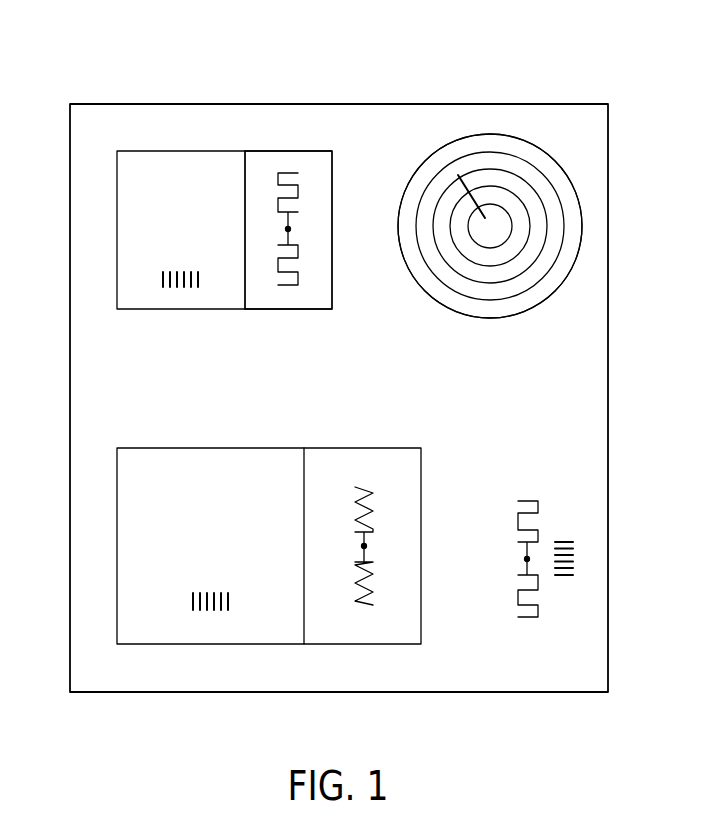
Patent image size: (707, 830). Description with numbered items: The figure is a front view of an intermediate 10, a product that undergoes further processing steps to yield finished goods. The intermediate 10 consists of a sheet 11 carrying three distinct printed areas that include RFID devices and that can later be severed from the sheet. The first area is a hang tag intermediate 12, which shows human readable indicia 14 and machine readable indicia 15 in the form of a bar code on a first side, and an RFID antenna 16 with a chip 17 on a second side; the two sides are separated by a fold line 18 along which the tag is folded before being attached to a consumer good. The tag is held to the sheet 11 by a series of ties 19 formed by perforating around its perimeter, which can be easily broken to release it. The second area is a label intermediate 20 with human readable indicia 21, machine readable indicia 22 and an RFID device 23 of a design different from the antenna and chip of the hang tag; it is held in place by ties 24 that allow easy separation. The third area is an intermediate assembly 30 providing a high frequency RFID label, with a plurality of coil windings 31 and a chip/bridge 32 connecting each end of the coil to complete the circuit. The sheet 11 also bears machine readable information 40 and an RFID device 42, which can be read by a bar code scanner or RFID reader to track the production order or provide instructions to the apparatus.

The intermediate 10 is at (371, 354).
The sheet 11 is at (329, 397).
The hang tag intermediate 12 is at (259, 297).
The human readable indicia 14 is at (177, 200).
The machine readable indicia 15 is at (168, 287).
The RFID antenna 16 is at (298, 176).
The chip 17 is at (288, 229).
The fold line 18 is at (248, 177).
The ties 19 is at (115, 210).
The label intermediate 20 is at (155, 633).
The human readable indicia 21 is at (206, 488).
The machine readable indicia 22 is at (218, 610).
The RFID device 23 is at (367, 608).
The ties 24 is at (272, 647).
The intermediate assembly 30 is at (488, 310).
The coil windings 31 is at (540, 282).
The chip/bridge 32 is at (475, 173).
The machine readable information 40 is at (573, 567).
The RFID device 42 is at (538, 583).